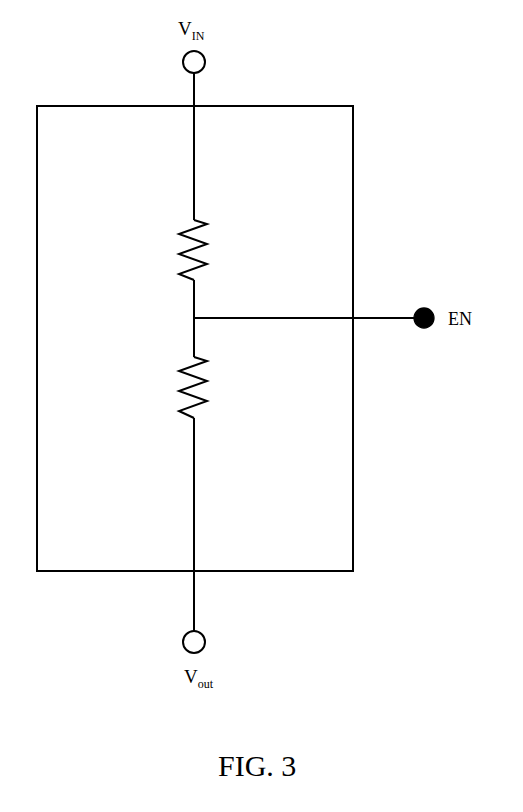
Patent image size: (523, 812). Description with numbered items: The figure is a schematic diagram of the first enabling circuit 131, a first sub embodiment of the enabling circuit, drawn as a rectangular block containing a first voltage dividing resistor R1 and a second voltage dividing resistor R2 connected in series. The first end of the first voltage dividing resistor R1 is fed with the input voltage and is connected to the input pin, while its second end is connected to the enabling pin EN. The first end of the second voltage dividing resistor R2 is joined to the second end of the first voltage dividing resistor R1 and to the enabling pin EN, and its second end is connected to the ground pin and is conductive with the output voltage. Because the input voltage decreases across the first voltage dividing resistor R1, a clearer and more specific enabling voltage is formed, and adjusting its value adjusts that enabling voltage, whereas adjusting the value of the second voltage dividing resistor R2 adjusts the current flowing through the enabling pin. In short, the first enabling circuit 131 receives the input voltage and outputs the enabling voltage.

The first enabling circuit 131 is at (309, 106).
The first voltage dividing resistor R1 is at (213, 250).
The second voltage dividing resistor R2 is at (213, 387).